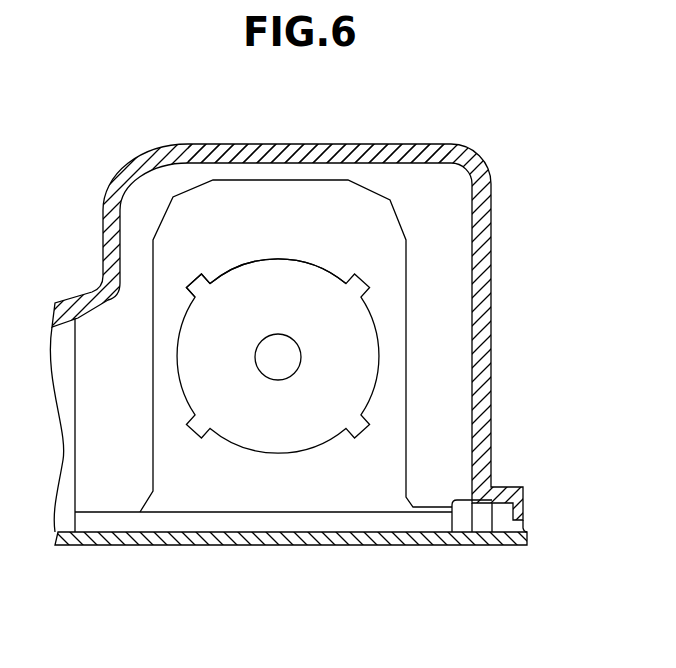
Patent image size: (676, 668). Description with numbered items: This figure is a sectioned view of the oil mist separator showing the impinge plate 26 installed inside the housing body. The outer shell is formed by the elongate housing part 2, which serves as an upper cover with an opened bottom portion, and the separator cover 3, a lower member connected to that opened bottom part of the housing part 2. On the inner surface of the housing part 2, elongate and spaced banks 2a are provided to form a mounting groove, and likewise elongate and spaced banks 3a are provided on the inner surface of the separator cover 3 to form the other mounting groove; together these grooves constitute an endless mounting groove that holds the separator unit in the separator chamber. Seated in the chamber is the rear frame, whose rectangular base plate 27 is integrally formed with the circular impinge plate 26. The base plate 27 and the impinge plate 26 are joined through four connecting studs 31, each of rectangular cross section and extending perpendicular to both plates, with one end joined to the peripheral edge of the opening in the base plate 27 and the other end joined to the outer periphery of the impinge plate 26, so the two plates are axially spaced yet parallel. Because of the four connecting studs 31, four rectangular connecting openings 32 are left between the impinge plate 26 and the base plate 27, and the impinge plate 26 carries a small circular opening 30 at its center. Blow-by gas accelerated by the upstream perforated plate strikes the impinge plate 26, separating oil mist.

The elongate housing part 2 is at (466, 148).
The bank 2a is at (396, 182).
The separator cover 3 is at (172, 536).
The bank 3a is at (110, 521).
The impinge plate 26 is at (248, 277).
The base plate 27 is at (293, 205).
The small circular opening 30 is at (272, 378).
The connecting stud 31 is at (208, 273).
The rectangular connecting opening 32 is at (388, 354).